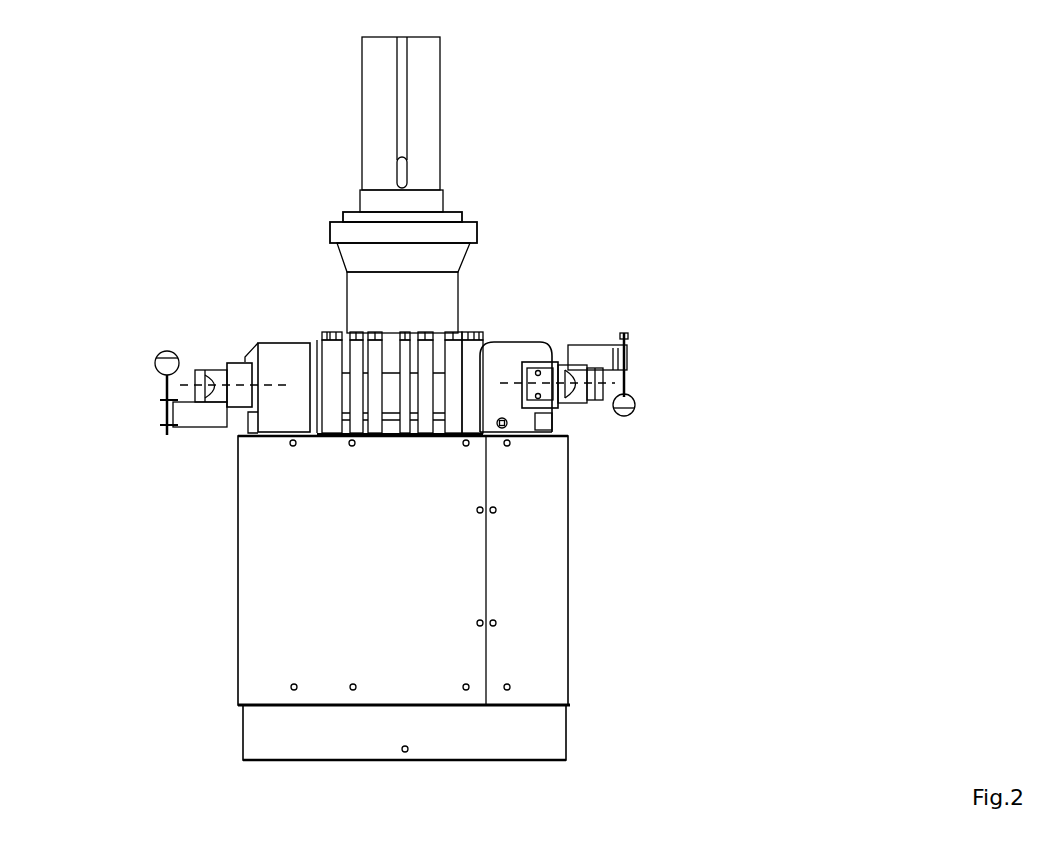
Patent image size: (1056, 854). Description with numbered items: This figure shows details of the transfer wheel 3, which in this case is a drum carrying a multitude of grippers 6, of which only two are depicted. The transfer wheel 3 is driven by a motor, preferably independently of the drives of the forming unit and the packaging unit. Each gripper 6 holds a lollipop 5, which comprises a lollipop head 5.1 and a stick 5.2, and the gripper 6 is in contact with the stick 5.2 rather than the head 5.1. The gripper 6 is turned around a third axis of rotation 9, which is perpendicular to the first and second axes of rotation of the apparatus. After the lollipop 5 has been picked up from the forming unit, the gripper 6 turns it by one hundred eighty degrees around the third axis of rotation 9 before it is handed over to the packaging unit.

The transfer wheel 3 is at (693, 152).
The lollipop 5 is at (708, 377).
The lollipop head 5.1 is at (632, 408).
The stick 5.2 is at (627, 357).
The gripper 6 is at (213, 345).
The third axis of rotation 9 is at (258, 385).